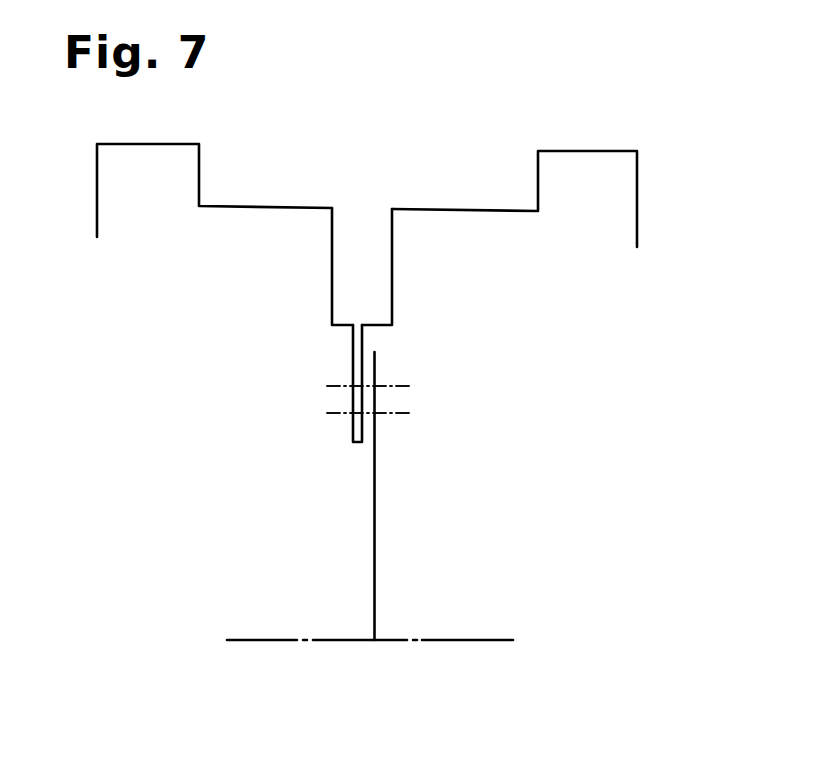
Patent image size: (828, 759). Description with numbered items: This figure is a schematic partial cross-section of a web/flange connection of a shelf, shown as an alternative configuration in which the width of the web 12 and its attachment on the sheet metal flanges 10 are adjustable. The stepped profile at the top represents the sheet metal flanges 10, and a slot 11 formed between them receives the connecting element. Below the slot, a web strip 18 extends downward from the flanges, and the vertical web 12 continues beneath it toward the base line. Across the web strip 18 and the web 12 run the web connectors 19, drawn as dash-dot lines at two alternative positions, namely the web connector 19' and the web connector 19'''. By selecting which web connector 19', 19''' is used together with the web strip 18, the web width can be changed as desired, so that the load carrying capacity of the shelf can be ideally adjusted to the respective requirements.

The sheet metal flange 10 is at (153, 142).
The slot 11 is at (362, 242).
The web 12 is at (374, 518).
The web strip 18 is at (353, 364).
The web connectors 19 is at (343, 423).
The web connector 19' is at (404, 388).
The web connector 19''' is at (410, 423).